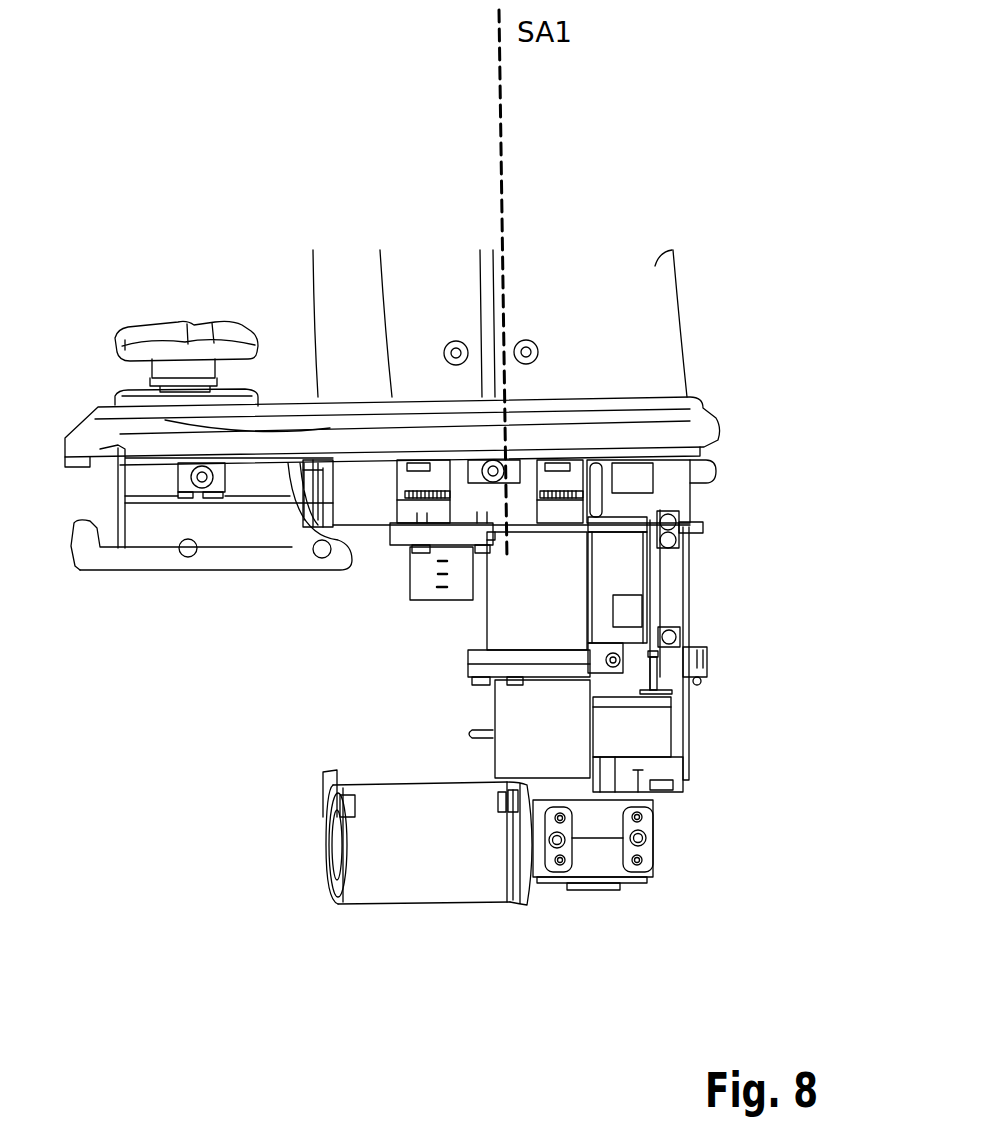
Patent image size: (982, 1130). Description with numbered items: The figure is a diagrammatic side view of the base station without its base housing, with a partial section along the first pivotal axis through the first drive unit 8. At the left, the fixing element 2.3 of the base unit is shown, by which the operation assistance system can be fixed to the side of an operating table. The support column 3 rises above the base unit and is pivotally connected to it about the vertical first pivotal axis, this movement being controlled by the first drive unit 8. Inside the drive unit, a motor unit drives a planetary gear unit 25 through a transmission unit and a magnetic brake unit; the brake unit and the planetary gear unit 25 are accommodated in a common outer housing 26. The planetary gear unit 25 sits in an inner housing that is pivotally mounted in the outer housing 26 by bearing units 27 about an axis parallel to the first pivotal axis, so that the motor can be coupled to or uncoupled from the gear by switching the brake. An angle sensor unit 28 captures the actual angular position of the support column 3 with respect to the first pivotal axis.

The fixing element 2.3 is at (122, 293).
The support column 3 is at (650, 258).
The first drive unit 8 is at (506, 761).
The planetary gear unit 25 is at (668, 568).
The outer housing 26 is at (508, 732).
The bearing units 27 is at (672, 640).
The angle sensor unit 28 is at (445, 592).